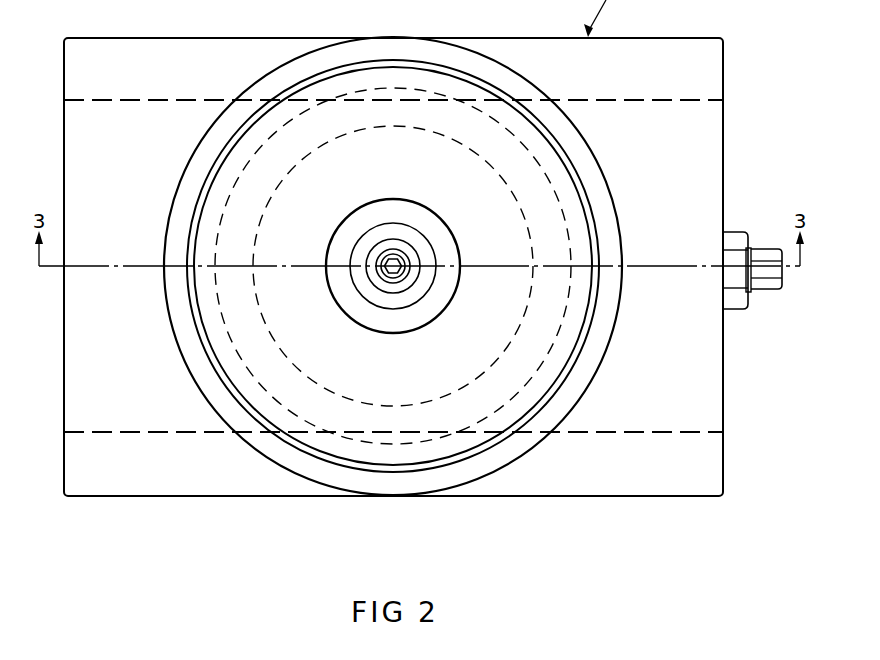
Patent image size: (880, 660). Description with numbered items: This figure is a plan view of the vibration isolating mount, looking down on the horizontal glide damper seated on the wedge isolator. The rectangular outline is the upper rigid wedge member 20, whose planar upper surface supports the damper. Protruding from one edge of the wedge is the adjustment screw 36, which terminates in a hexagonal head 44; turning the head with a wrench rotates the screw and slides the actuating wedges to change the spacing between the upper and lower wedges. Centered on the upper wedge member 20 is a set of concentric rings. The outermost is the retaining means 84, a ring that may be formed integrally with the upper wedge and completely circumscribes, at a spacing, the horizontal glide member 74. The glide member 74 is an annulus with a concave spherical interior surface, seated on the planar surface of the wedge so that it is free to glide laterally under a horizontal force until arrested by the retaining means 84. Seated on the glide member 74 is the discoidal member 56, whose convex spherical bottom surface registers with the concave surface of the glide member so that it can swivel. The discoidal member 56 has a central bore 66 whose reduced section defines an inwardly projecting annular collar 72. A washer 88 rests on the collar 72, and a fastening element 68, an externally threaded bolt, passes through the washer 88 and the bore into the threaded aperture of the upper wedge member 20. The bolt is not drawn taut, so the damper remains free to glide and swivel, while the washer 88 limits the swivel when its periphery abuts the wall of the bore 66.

The upper rigid wedge member 20 is at (722, 402).
The adjustment screw 36 is at (748, 250).
The hexagonal head 44 is at (767, 290).
The discoidal member 56 is at (235, 370).
The bore 66 is at (430, 303).
The fastening element 68 is at (397, 275).
The annular collar 72 is at (392, 320).
The horizontal glide member 74 is at (560, 380).
The retaining means 84 is at (598, 358).
The washer 88 is at (362, 303).